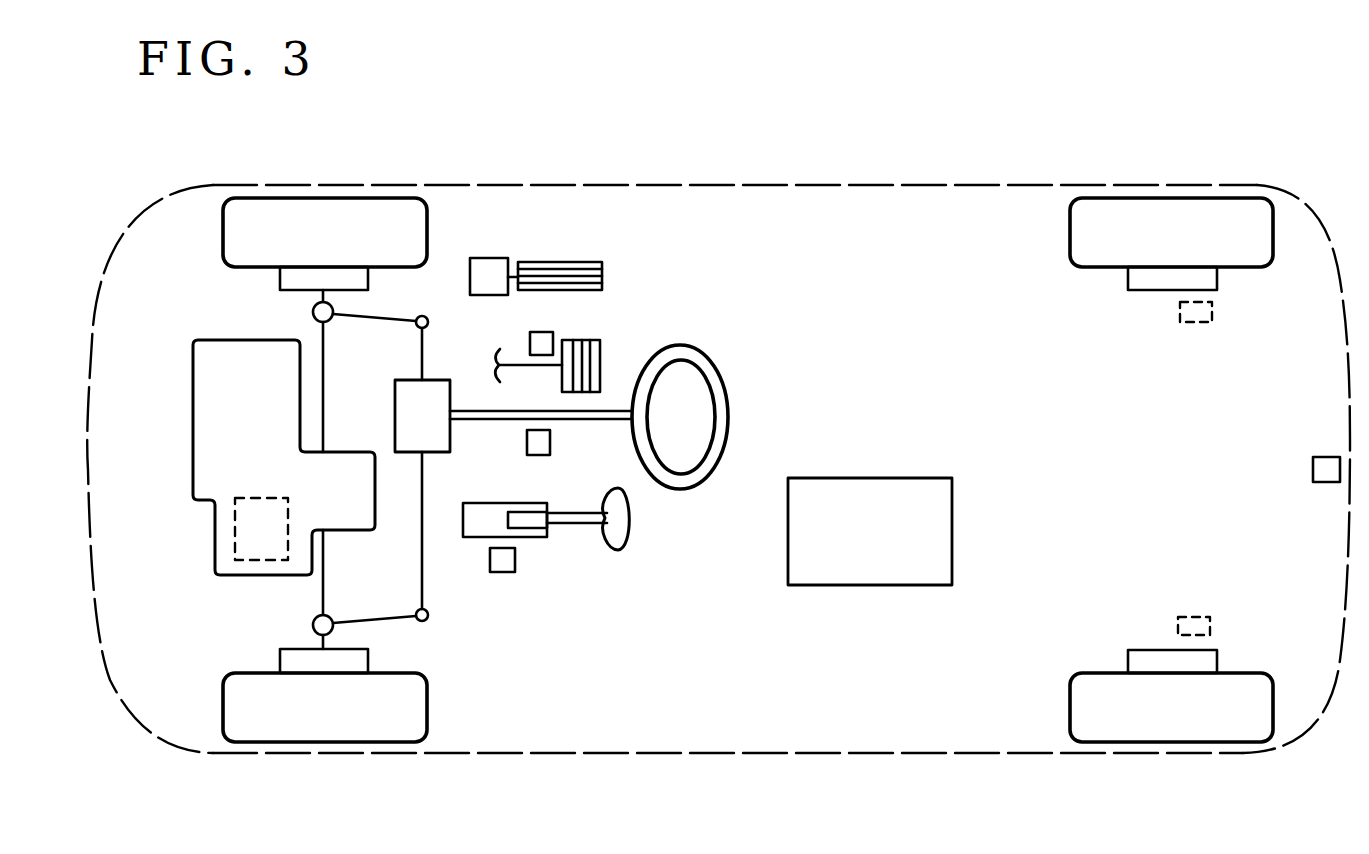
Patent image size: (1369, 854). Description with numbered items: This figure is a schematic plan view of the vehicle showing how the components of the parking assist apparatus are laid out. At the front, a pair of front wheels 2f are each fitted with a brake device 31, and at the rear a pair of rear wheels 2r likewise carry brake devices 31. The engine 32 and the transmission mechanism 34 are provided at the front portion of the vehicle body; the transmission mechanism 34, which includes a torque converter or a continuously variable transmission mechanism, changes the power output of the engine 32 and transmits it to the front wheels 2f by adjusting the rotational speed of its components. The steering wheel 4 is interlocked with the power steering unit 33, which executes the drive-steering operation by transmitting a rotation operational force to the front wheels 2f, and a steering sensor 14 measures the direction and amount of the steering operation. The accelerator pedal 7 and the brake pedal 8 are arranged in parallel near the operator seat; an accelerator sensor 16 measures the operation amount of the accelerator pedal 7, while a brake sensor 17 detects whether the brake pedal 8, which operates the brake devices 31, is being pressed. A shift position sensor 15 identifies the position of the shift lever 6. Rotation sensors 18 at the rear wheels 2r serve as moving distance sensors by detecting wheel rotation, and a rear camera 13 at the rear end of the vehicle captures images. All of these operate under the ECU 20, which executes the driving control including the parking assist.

The front wheels 2f is at (327, 198).
The rear wheels 2r is at (1168, 198).
The steering wheel 4 is at (728, 400).
The shift lever 6 is at (631, 518).
The accelerator pedal 7 is at (582, 262).
The brake pedal 8 is at (600, 358).
The rear camera 13 is at (1313, 472).
The steering sensor 14 is at (535, 455).
The shift position sensor 15 is at (515, 558).
The accelerator sensor 16 is at (490, 258).
The brake sensor 17 is at (530, 342).
The rotation sensors 18 is at (1195, 322).
The ECU 20 is at (868, 478).
The brake devices 31 is at (280, 277).
The engine 32 is at (263, 575).
The power steering unit 33 is at (395, 432).
The transmission mechanism 34 is at (235, 532).